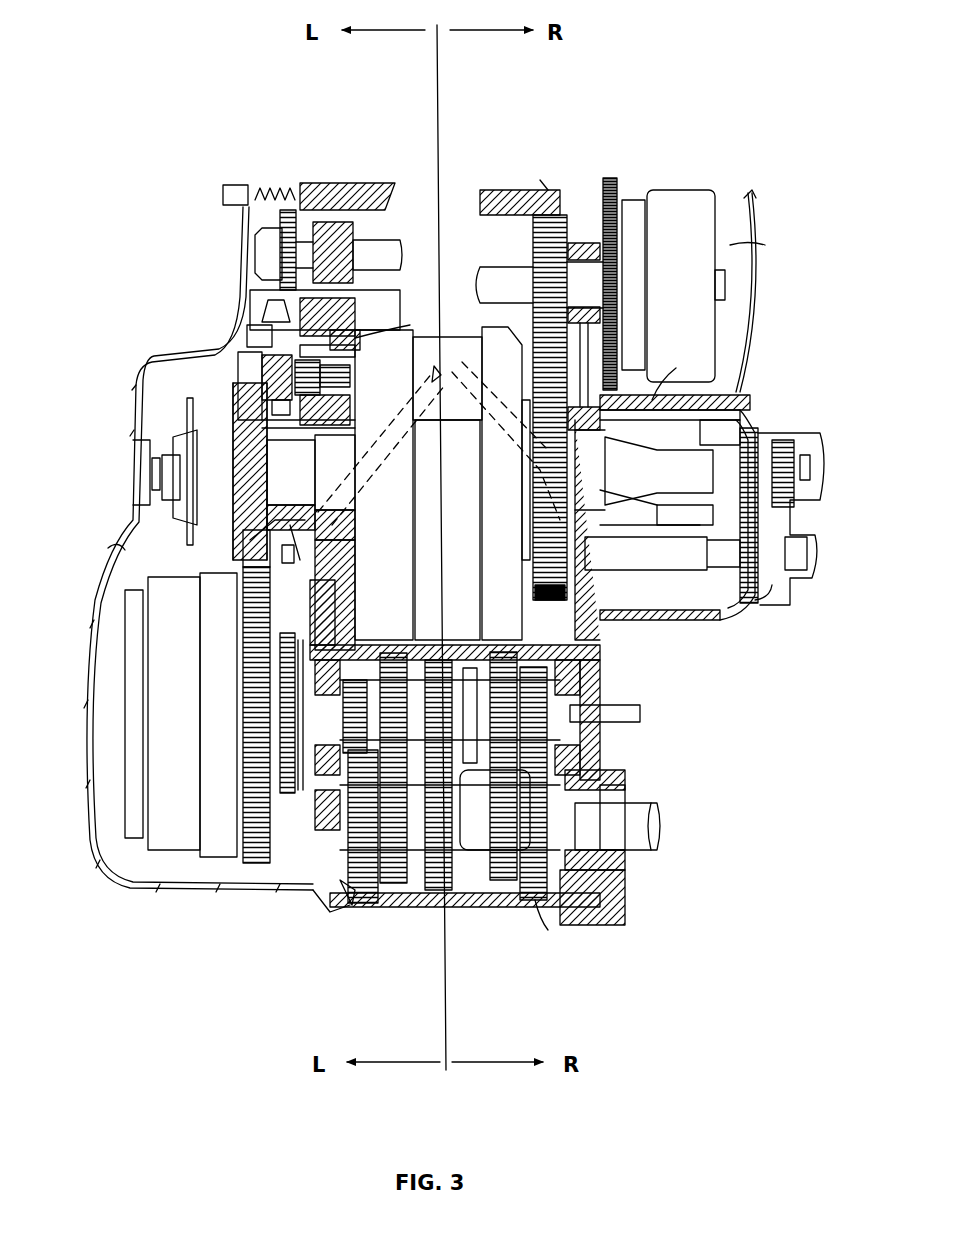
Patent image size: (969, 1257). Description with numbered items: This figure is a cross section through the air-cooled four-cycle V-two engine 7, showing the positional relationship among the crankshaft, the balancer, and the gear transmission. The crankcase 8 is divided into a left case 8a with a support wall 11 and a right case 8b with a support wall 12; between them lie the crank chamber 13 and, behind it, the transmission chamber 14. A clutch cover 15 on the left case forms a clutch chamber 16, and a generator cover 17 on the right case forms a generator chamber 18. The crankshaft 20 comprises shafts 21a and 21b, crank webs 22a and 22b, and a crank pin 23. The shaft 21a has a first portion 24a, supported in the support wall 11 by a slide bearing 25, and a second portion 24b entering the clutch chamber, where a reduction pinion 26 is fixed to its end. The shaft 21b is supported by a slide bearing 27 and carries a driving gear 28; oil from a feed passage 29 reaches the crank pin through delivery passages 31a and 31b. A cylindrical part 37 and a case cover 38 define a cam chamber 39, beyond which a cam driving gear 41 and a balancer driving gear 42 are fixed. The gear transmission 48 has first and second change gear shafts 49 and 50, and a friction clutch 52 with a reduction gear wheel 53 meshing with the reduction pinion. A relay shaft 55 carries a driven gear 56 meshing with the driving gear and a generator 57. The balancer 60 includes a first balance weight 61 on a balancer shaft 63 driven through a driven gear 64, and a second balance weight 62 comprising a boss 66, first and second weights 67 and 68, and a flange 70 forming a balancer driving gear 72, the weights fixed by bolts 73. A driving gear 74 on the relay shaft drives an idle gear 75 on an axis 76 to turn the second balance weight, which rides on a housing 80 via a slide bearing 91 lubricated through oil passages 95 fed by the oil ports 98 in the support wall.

The engine 7 is at (565, 150).
The crankcase 8 is at (515, 965).
The left case 8a is at (418, 905).
The right case 8b is at (500, 905).
The support wall 11 is at (352, 565).
The support wall 12 is at (570, 600).
The crank chamber 13 is at (506, 210).
The transmission chamber 14 is at (378, 905).
The clutch cover 15 is at (134, 520).
The clutch chamber 16 is at (116, 565).
The generator cover 17 is at (752, 215).
The generator chamber 18 is at (765, 243).
The crankshaft 20 is at (292, 478).
The shaft 21a is at (150, 440).
The shaft 21b is at (700, 470).
The crank web 22a is at (418, 615).
The crank web 22b is at (484, 528).
The crank pin 23 is at (445, 412).
The first portion 24a is at (355, 485).
The second portion 24b is at (250, 540).
The slide bearing 25 is at (355, 528).
The reduction pinion 26 is at (238, 380).
The slide bearing 27 is at (669, 371).
The driving gear 28 is at (530, 590).
The feed passage 29 is at (350, 385).
The delivery passage 31a is at (408, 468).
The delivery passage 31b is at (492, 490).
The cylindrical part 37 is at (618, 620).
The case cover 38 is at (732, 610).
The cam chamber 39 is at (740, 420).
The cam driving gear 41 is at (794, 445).
The balancer driving gear 42 is at (760, 430).
The gear transmission 48 is at (585, 780).
The first change gear shaft 49 is at (605, 710).
The second change gear shaft 50 is at (650, 833).
The friction clutch 52 is at (180, 855).
The reduction gear wheel 53 is at (258, 865).
The relay shaft 55 is at (382, 258).
The driven gear 56 is at (560, 215).
The generator 57 is at (680, 212).
The balancer 60 is at (660, 610).
The first balance weight 61 is at (694, 600).
The second balance weight 62 is at (275, 330).
The balancer shaft 63 is at (645, 545).
The driven gear 64 is at (758, 605).
The boss 66 is at (245, 530).
The first weight 67 is at (247, 338).
The second weight 68 is at (355, 352).
The flange 70 is at (290, 633).
The balancer driving gear 72 is at (290, 563).
The bolts 73 is at (262, 410).
The driving gear 74 is at (296, 215).
The idle gear 75 is at (340, 332).
The axis 76 is at (392, 320).
The housing 80 is at (292, 450).
The slide bearing 91 is at (290, 525).
The oil passages 95 is at (260, 455).
The gear 98 is at (355, 414).